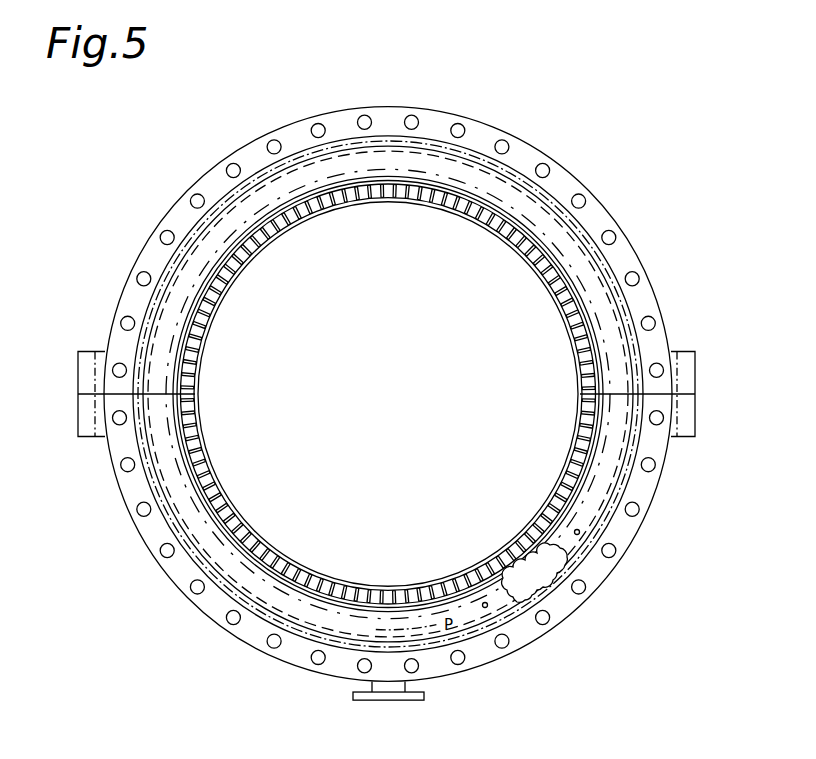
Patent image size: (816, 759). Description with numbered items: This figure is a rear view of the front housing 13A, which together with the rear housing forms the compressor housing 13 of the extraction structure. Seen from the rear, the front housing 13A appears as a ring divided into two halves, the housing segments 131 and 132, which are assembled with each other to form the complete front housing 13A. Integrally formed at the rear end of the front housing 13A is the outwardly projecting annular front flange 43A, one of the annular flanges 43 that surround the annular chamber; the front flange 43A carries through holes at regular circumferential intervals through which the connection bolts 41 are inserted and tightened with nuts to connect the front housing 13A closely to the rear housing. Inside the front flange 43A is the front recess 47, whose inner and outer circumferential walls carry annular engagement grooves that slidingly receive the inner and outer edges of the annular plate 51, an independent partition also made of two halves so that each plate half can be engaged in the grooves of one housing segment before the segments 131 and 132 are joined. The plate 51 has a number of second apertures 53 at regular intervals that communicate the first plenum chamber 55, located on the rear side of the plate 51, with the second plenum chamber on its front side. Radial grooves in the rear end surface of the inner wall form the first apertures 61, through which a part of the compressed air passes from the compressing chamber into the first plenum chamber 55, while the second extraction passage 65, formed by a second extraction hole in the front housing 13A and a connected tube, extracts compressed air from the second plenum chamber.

The front housing 13A is at (400, 394).
The compressor housing 13 is at (642, 265).
The front flange 43A is at (388, 388).
The annular flange 43 is at (520, 157).
The housing segment 131 is at (150, 258).
The housing segment 132 is at (177, 570).
The connection bolt 41 is at (613, 232).
The annular plate 51 is at (325, 613).
The second aperture 53 is at (438, 657).
The first aperture 61 is at (528, 257).
The second extraction passage 65 is at (560, 582).
The first plenum chamber 55 is at (546, 613).
The front recess 47 is at (513, 608).